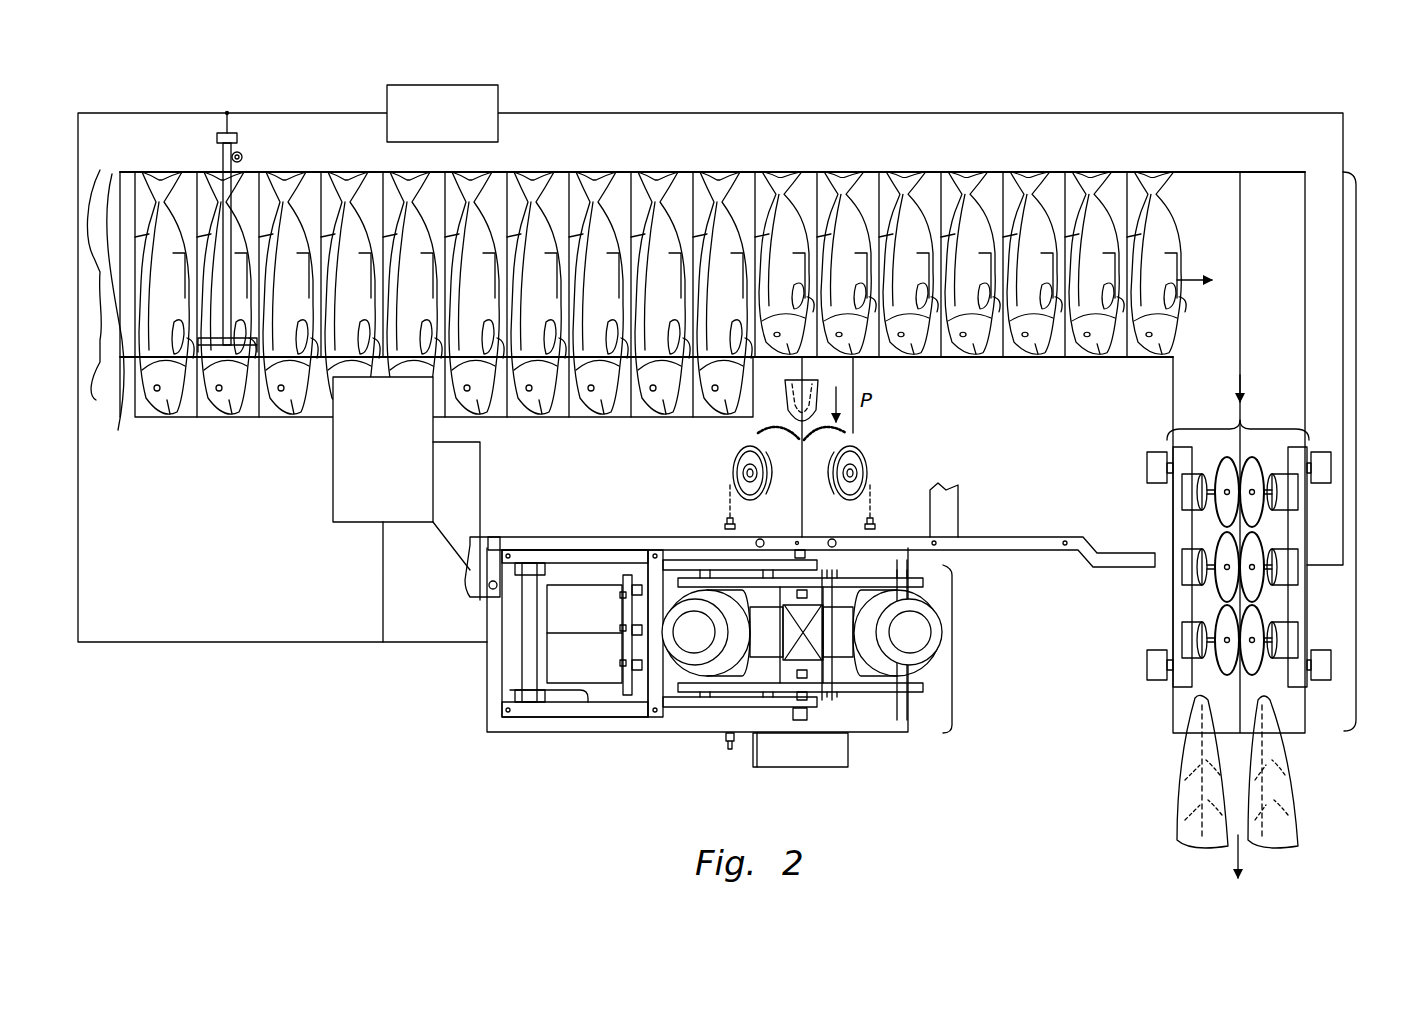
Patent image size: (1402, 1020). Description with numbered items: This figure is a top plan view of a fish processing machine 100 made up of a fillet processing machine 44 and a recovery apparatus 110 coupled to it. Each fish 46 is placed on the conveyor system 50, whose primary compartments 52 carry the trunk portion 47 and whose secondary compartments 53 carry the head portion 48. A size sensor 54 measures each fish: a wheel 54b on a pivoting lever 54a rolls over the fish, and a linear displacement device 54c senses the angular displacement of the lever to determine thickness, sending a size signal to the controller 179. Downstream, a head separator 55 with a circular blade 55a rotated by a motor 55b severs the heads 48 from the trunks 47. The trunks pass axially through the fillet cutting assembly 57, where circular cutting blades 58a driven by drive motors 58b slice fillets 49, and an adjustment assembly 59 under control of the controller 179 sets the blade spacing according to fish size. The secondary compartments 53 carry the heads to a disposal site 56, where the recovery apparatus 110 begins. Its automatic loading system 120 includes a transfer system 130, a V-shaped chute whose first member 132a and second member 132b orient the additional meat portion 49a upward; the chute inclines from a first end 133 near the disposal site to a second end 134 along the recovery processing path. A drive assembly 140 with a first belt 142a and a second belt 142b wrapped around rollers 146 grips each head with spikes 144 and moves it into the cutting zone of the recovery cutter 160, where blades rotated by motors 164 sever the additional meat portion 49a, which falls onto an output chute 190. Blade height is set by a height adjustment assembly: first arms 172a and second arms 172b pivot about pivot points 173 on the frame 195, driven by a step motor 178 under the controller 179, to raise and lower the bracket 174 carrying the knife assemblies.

The fillet processing machine 44 is at (1285, 140).
The fish processing machine 100 is at (1357, 250).
The controller 179 is at (460, 128).
The trunk portion 47 is at (100, 178).
The conveyor system 50 is at (612, 232).
The primary compartments 52 is at (746, 192).
The fish 46 is at (158, 414).
The head portion 48 is at (97, 400).
The secondary compartments 53 is at (508, 420).
The size sensor 54 is at (222, 148).
The pivoting lever 54a is at (284, 352).
The wheel 54b is at (240, 350).
The linear displacement device 54c is at (243, 157).
The head separator 55 is at (350, 545).
The circular blade 55a is at (352, 360).
The motor 55b is at (405, 522).
The spikes 144 is at (790, 420).
The first end 133 is at (812, 358).
The disposal site 56 is at (818, 365).
The additional meat portion 49a is at (836, 375).
The second member 132b is at (850, 418).
The transfer system 130 is at (852, 432).
The second end 134 is at (852, 440).
The automatic loading system 120 is at (748, 458).
The first member 132a is at (735, 455).
The first belt 142a is at (747, 474).
The second belt 142b is at (852, 476).
The rollers 146 is at (728, 516).
The drive assembly 140 is at (888, 470).
The bracket 174 is at (938, 553).
The pivot points 173 is at (697, 545).
The recovery cutter 160 is at (952, 668).
The first arms 172a is at (580, 560).
The second arms 172b is at (590, 708).
The step motor 178 is at (548, 665).
The frame 195 is at (535, 732).
The motors 164 is at (684, 650).
The output chute 190 is at (848, 750).
The recovery apparatus 110 is at (1000, 600).
The fillet cutting assembly 57 is at (1215, 428).
The adjustment assembly 59 is at (1172, 680).
The circular cutting blades 58a is at (1222, 488).
The drive motors 58b is at (1182, 492).
The fillets 49 is at (1255, 793).